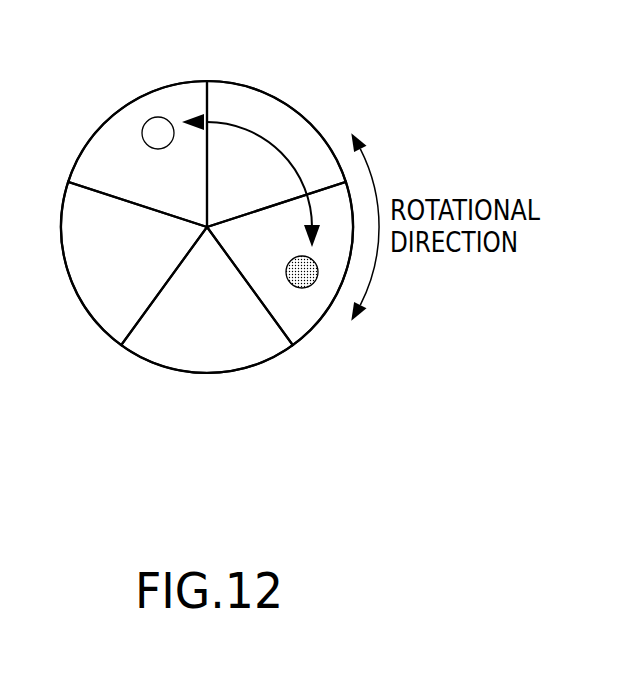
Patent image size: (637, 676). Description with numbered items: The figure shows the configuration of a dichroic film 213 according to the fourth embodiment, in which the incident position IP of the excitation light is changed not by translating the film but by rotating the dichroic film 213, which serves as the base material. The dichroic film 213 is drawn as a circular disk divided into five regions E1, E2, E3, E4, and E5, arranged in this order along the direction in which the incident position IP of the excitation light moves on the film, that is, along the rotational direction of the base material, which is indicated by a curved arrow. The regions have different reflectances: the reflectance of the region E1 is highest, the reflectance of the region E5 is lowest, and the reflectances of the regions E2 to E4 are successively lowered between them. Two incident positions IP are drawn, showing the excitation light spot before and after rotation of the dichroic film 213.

The dichroic film 213 is at (302, 100).
The region E1 is at (298, 325).
The region E2 is at (253, 115).
The region E3 is at (115, 163).
The region E4 is at (118, 293).
The region E5 is at (205, 338).
The incident position IP is at (158, 113).